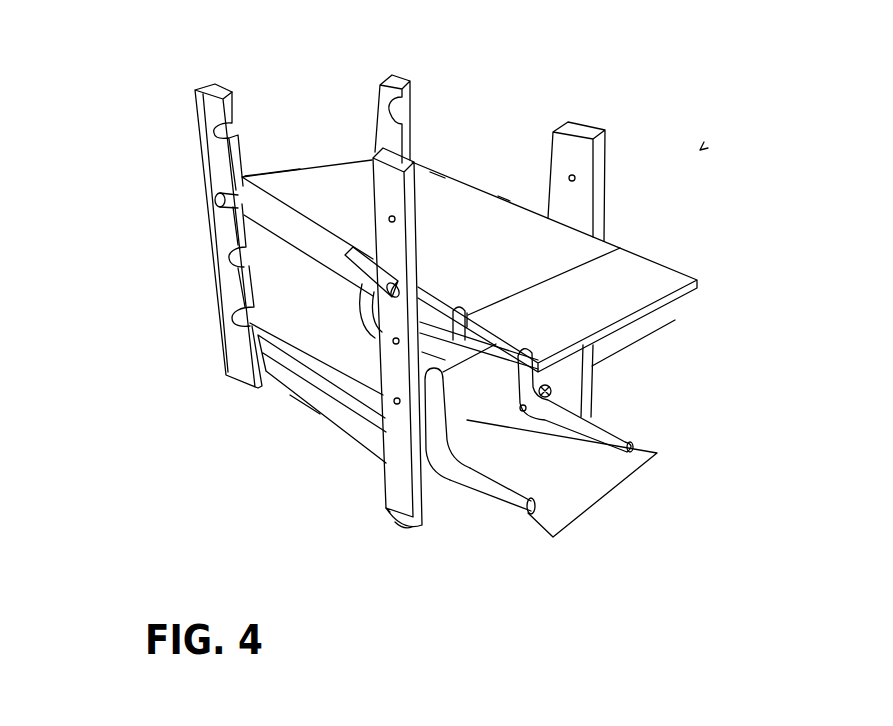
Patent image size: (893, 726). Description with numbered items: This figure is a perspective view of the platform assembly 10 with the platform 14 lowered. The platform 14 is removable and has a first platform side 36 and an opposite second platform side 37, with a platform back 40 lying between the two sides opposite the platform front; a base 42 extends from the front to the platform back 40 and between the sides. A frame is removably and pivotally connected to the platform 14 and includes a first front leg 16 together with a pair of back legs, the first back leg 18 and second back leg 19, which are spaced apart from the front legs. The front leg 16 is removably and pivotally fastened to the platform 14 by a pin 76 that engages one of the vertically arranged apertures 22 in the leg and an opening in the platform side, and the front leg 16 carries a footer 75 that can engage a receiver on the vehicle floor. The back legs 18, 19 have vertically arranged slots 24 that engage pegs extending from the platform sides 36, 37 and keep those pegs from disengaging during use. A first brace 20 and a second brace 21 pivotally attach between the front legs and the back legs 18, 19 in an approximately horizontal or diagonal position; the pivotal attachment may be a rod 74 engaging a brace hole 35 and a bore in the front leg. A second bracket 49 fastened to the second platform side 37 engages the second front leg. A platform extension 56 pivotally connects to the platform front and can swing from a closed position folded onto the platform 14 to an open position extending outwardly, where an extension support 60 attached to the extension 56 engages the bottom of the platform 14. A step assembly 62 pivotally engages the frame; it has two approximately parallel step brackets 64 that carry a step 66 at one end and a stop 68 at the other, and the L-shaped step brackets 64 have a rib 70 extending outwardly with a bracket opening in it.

The platform assembly 10 is at (700, 150).
The platform 14 is at (332, 203).
The first front leg 16 is at (587, 152).
The first back leg 18 is at (398, 100).
The second back leg 19 is at (222, 180).
The first brace 20 is at (393, 467).
The second brace 21 is at (302, 383).
The aperture 22 is at (576, 179).
The slot 24 is at (214, 132).
The brace hole 35 is at (597, 365).
The first platform side 36 is at (503, 193).
The second platform side 37 is at (300, 238).
The platform back 40 is at (299, 166).
The base 42 is at (438, 187).
The second bracket 49 is at (353, 297).
The platform extension 56 is at (637, 273).
The extension support 60 is at (633, 328).
The step assembly 62 is at (533, 528).
The step bracket 64 is at (600, 430).
The step 66 is at (577, 505).
The stop 68 is at (333, 435).
The rib 70 is at (512, 500).
The rod 74 is at (483, 437).
The footer 75 is at (384, 508).
The pin 76 is at (403, 520).